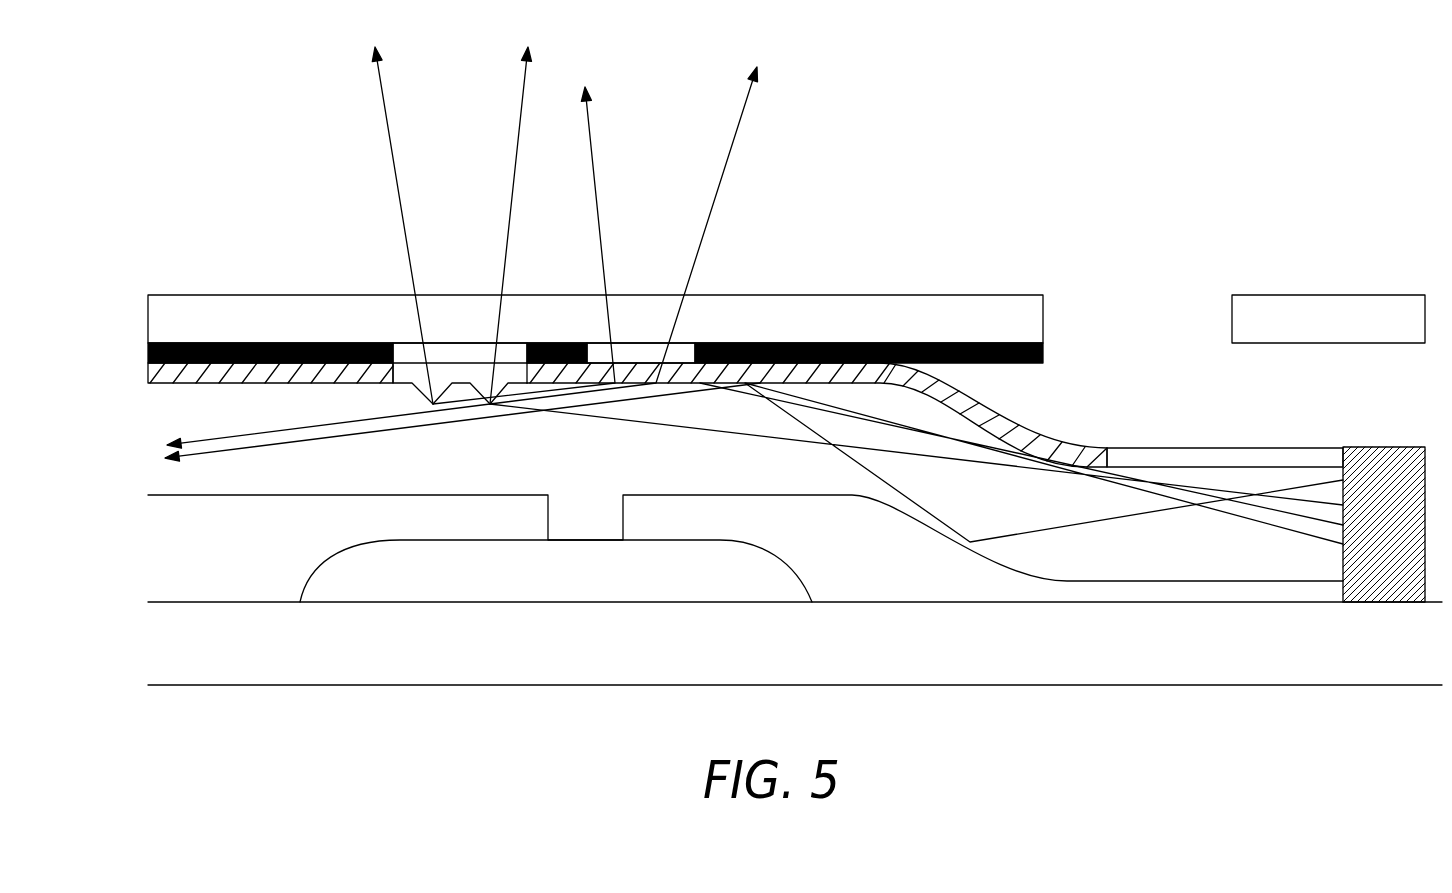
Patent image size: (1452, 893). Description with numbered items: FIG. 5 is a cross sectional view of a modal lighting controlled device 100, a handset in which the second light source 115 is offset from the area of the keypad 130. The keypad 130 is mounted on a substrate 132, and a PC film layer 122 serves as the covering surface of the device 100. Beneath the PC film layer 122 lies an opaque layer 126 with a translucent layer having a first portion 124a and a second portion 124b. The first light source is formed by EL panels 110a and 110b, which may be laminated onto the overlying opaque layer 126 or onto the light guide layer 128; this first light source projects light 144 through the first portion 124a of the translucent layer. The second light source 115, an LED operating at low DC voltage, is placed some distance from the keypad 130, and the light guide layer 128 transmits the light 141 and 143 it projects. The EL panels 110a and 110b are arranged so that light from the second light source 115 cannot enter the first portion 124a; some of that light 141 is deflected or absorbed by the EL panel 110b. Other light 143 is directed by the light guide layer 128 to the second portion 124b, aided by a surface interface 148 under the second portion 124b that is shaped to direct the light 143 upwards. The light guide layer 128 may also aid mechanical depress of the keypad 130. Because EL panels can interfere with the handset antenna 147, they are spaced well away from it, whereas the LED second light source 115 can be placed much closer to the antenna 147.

The device 100 is at (1376, 59).
The PC film layer 122 is at (150, 318).
The opaque layer 126 is at (150, 354).
The first portion of translucent layer 124a is at (640, 352).
The second portion of translucent layer 124b is at (462, 352).
The EL panel 110a is at (258, 372).
The EL panel 110b is at (820, 378).
The surface interface 148 is at (409, 392).
The light guide layer 128 is at (168, 416).
The light 141 is at (335, 437).
The light 143 is at (516, 141).
The light 144 is at (717, 197).
The handset antenna 147 is at (1232, 318).
The second light source 115 is at (1384, 447).
The keypad 130 is at (580, 556).
The substrate 132 is at (142, 646).